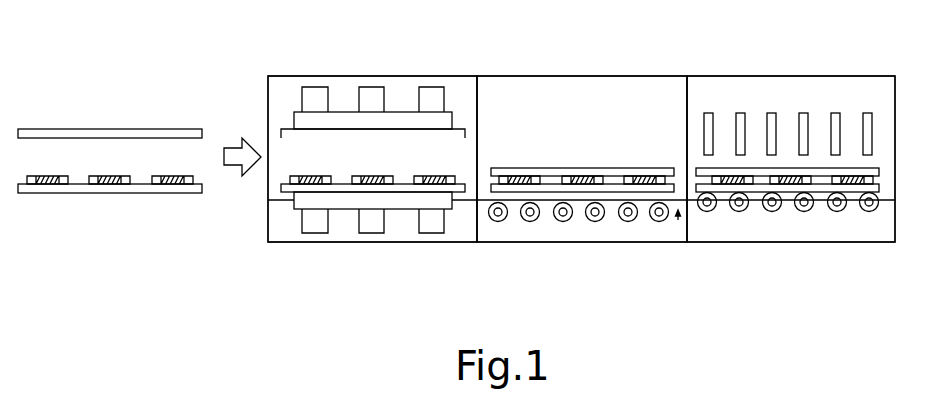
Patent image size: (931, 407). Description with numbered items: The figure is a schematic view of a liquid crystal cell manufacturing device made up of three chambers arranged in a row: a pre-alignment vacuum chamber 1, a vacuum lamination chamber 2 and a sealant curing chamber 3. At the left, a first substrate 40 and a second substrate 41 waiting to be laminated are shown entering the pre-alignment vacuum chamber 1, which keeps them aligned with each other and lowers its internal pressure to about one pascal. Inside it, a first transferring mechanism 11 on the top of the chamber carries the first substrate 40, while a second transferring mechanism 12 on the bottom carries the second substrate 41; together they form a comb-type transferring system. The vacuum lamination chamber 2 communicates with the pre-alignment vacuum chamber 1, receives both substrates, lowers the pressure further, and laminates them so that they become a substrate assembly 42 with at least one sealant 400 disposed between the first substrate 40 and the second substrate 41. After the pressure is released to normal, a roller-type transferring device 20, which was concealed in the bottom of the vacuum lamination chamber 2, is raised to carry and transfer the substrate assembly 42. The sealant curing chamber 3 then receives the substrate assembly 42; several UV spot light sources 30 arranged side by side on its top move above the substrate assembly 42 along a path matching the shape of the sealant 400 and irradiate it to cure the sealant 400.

The pre-alignment vacuum chamber 1 is at (351, 64).
The first transferring mechanism 11 is at (402, 112).
The second transferring mechanism 12 is at (405, 209).
The first substrate 40 is at (127, 129).
The second substrate 41 is at (121, 193).
The sealant 400 is at (537, 176).
The vacuum lamination chamber 2 is at (565, 62).
The transferring device 20 is at (541, 235).
The substrate assembly 42 is at (652, 153).
The sealant curing chamber 3 is at (768, 63).
The UV spot light source 30 is at (708, 113).